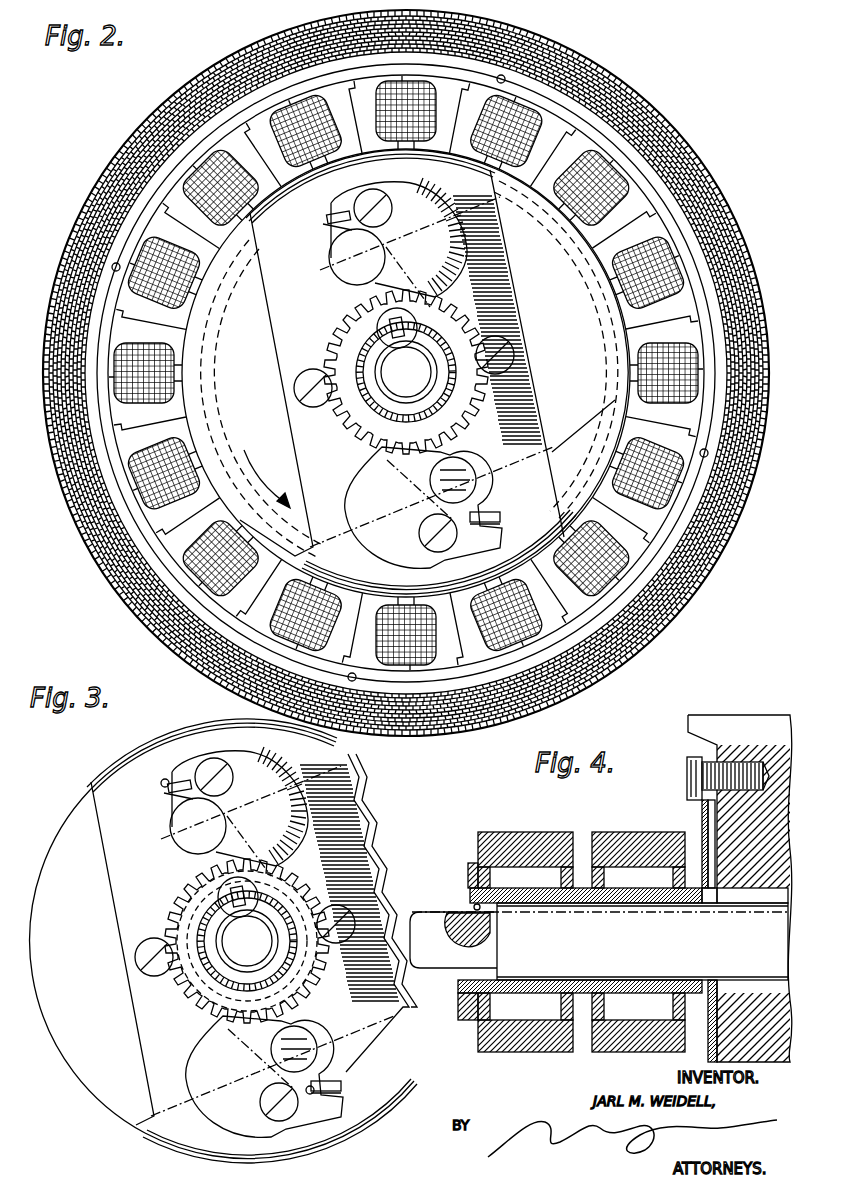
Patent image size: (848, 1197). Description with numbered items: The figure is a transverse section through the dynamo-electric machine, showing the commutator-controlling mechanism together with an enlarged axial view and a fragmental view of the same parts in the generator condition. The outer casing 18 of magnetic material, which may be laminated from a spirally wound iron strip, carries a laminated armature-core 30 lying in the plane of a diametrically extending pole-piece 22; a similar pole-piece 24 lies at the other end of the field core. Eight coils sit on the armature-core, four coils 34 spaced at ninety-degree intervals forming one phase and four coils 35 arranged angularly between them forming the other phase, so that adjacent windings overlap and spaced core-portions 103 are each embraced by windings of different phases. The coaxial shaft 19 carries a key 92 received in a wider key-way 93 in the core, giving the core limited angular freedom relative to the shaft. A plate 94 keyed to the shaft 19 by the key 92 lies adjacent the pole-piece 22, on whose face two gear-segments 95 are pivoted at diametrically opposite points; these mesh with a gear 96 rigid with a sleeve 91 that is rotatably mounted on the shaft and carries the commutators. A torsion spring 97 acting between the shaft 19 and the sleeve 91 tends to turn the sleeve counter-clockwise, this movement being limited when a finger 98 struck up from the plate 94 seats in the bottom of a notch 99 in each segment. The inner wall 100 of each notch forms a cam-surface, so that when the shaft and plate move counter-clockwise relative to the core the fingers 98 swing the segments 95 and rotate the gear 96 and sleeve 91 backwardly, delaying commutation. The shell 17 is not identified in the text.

In FIG. 2, the outer shell 17 is at (625, 90).
In FIG. 2, the casing 18 is at (78, 227).
In FIG. 2, the shaft 19 is at (406, 372).
In FIG. 3, the shaft 19 is at (247, 941).
In FIG. 4, the shaft 19 is at (599, 941).
In FIG. 2, the pole-piece 22 is at (253, 257).
In FIG. 3, the pole-piece 22 is at (223, 941).
In FIG. 4, the pole-piece 22 is at (749, 713).
In FIG. 2, the pole-piece 24 is at (226, 308).
In FIG. 3, the pole-piece 24 is at (233, 939).
In FIG. 2, the armature-core 30 is at (107, 305).
In FIG. 2, the coils 34 is at (545, 75).
In FIG. 2, the coils 35 is at (671, 217).
In FIG. 2, the sleeve 91 is at (367, 427).
In FIG. 3, the sleeve 91 is at (244, 941).
In FIG. 4, the sleeve 91 is at (593, 900).
In FIG. 2, the key 92 is at (385, 330).
In FIG. 3, the key 92 is at (193, 906).
In FIG. 4, the key 92 is at (750, 900).
In FIG. 2, the key-way 93 is at (343, 313).
In FIG. 3, the key-way 93 is at (272, 885).
In FIG. 2, the plate 94 is at (470, 493).
In FIG. 3, the plate 94 is at (223, 935).
In FIG. 4, the plate 94 is at (700, 823).
In FIG. 2, the gear-segments 95 is at (416, 373).
In FIG. 3, the gear-segments 95 is at (257, 942).
In FIG. 4, the gear-segments 95 is at (700, 807).
In FIG. 2, the gear 96 is at (357, 417).
In FIG. 3, the gear 96 is at (234, 965).
In FIG. 4, the gear 96 is at (702, 903).
In FIG. 4, the torsion spring 97 is at (472, 908).
In FIG. 2, the finger 98 is at (332, 213).
In FIG. 3, the finger 98 is at (241, 943).
In FIG. 3, the notch 99 is at (237, 942).
In FIG. 2, the inner wall 100 is at (323, 223).
In FIG. 3, the inner wall 100 is at (244, 945).
In FIG. 2, the core-portions 103 is at (566, 133).